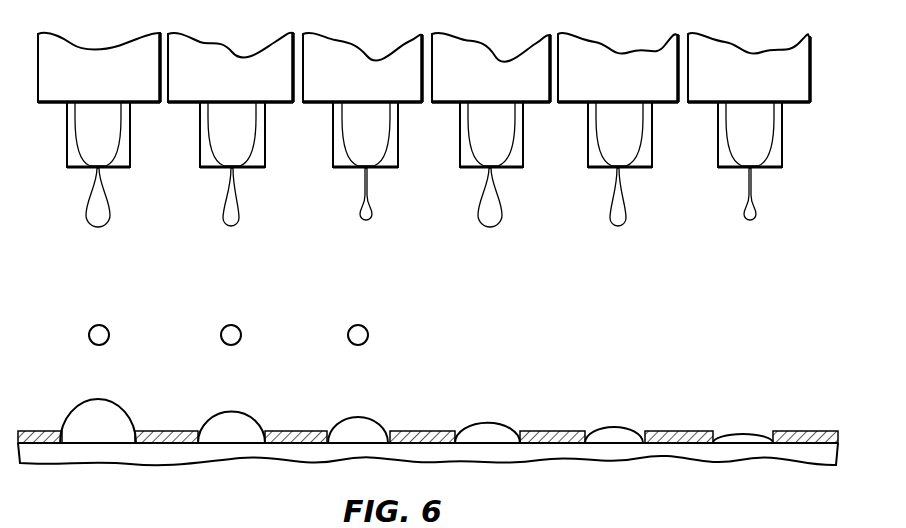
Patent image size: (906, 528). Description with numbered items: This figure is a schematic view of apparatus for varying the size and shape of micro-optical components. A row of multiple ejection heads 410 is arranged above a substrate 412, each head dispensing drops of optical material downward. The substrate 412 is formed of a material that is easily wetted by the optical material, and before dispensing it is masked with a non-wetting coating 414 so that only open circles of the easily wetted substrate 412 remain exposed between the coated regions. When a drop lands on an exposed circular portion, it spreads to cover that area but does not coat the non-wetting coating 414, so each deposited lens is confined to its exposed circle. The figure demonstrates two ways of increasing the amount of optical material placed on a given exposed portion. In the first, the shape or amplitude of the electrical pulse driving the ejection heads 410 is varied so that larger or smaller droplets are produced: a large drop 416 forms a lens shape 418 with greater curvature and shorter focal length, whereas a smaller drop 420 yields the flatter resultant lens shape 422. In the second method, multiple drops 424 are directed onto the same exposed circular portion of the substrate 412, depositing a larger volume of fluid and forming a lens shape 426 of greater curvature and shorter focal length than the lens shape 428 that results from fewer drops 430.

The ejection head 410 is at (93, 43).
The substrate 412 is at (265, 462).
The non-wetting coating 414 is at (33, 430).
The large drop 416 is at (503, 218).
The lens shape 418 is at (487, 423).
The smaller drop 420 is at (627, 218).
The lens shape 422 is at (613, 428).
The multiple drops 424 is at (111, 207).
The lens shape 426 is at (96, 400).
The lens shape 428 is at (230, 412).
The fewer drops 430 is at (241, 209).